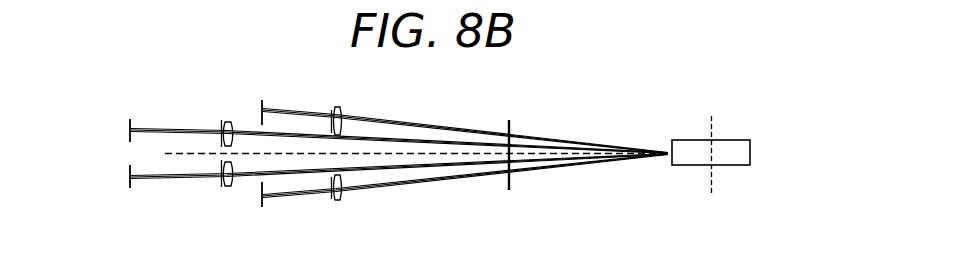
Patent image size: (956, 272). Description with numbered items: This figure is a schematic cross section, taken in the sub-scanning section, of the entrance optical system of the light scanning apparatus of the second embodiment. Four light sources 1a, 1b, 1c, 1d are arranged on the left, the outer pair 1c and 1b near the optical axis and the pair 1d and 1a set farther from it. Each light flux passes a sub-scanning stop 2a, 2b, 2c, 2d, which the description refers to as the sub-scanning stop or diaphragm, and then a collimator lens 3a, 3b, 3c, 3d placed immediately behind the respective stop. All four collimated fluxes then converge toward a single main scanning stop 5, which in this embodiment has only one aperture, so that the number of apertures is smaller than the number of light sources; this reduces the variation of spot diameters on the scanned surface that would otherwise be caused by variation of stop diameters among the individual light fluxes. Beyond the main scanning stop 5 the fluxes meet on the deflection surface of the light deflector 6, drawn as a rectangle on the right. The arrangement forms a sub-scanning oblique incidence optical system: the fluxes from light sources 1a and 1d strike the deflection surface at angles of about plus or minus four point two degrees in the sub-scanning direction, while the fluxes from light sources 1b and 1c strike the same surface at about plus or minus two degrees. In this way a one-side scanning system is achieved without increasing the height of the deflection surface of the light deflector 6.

The light source 1a is at (261, 200).
The light source 1b is at (128, 176).
The light source 1c is at (128, 130).
The light source 1d is at (259, 105).
The sub-scanning stop 2a is at (330, 188).
The sub-scanning stop 2b is at (220, 177).
The sub-scanning stop 2c is at (220, 131).
The sub-scanning stop 2d is at (330, 115).
The collimator lens 3a is at (338, 201).
The collimator lens 3b is at (226, 187).
The collimator lens 3c is at (226, 121).
The collimator lens 3d is at (338, 107).
The main scanning stop 5 is at (511, 125).
The light deflector 6 is at (733, 148).